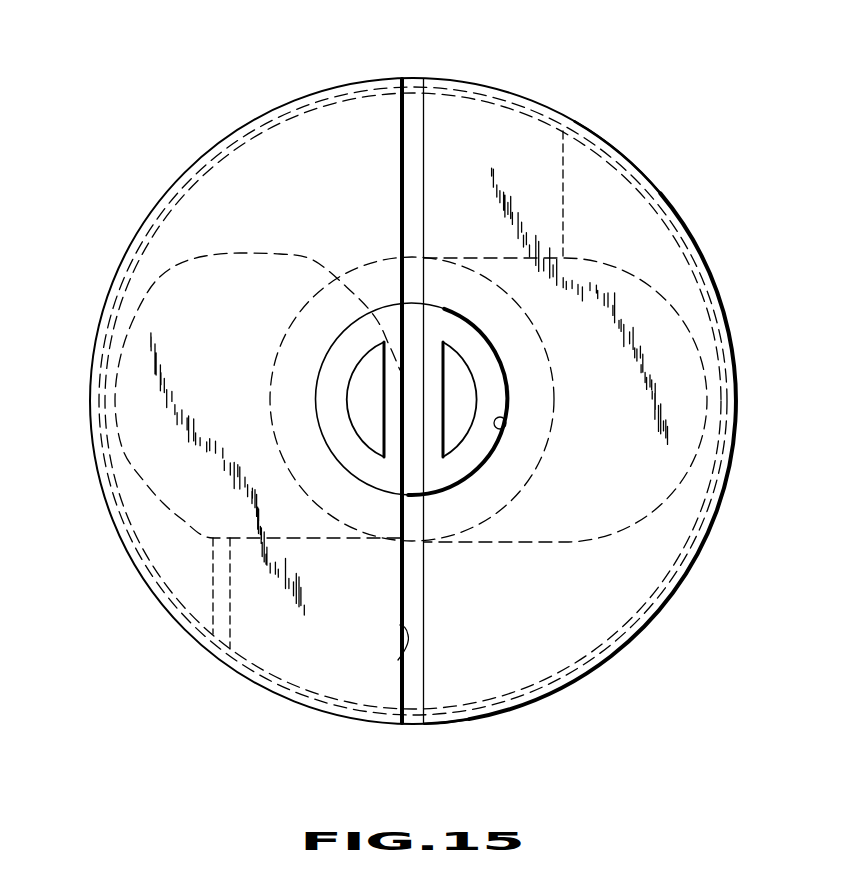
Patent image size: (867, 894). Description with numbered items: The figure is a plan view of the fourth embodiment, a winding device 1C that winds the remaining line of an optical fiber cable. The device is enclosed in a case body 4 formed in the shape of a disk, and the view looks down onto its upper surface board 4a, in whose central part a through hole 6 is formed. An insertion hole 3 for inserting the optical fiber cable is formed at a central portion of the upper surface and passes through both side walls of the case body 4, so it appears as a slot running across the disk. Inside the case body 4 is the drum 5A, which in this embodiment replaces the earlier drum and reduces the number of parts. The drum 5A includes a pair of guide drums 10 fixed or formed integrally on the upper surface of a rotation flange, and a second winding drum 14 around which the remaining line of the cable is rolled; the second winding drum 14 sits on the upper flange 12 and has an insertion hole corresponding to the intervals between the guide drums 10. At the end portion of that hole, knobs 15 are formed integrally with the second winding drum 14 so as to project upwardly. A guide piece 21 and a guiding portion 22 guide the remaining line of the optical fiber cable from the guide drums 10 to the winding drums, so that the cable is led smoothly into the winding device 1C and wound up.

The winding device 1C is at (654, 80).
The insertion hole 3 is at (398, 660).
The case body 4 is at (668, 609).
The upper surface board 4a is at (288, 148).
The drum 5A is at (175, 191).
The through hole 6 is at (504, 434).
The guide drums 10 is at (125, 455).
The upper flange 12 is at (556, 668).
The second winding drum 14 is at (459, 530).
The knobs 15 is at (385, 378).
The guide piece 21 is at (502, 145).
The guiding portion 22 is at (220, 580).